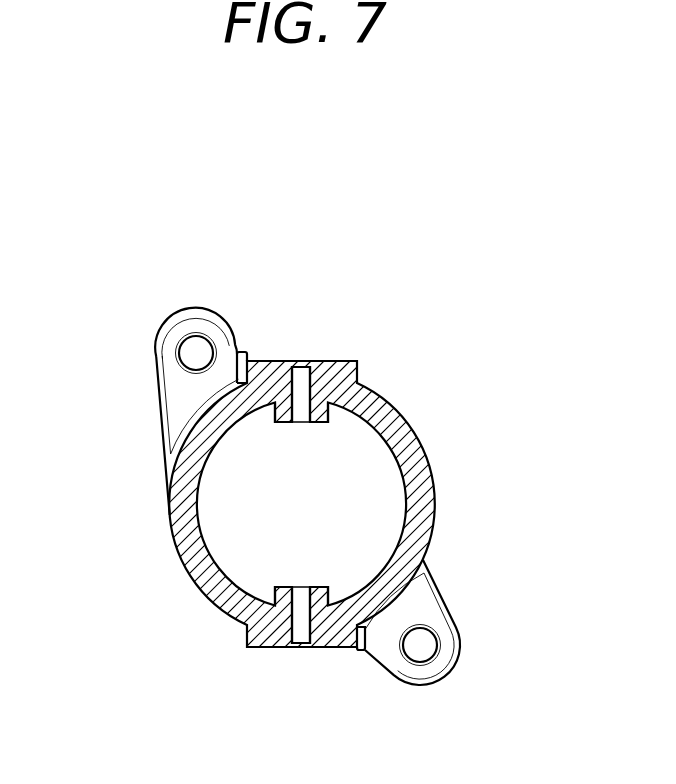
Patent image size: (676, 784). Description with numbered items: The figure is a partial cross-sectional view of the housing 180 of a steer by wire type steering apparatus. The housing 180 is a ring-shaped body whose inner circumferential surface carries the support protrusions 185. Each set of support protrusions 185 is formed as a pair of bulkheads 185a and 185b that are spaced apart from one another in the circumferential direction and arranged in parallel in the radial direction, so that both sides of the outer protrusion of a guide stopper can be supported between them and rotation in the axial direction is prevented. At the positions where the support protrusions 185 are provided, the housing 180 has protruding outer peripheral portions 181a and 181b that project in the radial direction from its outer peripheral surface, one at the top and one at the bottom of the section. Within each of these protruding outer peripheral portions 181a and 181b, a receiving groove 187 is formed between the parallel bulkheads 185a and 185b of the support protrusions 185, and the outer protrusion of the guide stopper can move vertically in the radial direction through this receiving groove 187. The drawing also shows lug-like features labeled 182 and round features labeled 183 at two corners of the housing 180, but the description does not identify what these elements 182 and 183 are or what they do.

The housing 180 is at (182, 258).
The protruding outer peripheral portion 181a is at (336, 360).
The protruding outer peripheral portion 181b is at (269, 648).
The mounting lug 182 is at (180, 383).
The mounting hole 183 is at (190, 351).
The support protrusions 185 is at (512, 421).
The bulkhead 185a is at (319, 424).
The bulkhead 185b is at (283, 424).
The receiving groove 187 is at (299, 364).